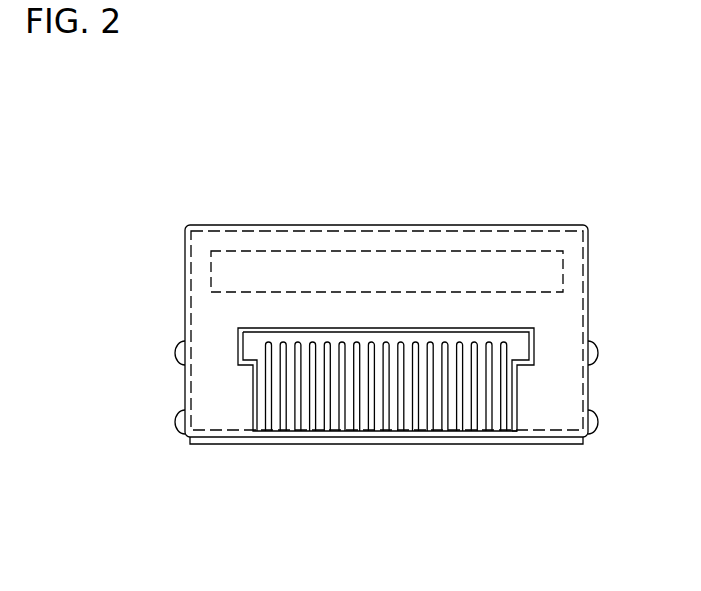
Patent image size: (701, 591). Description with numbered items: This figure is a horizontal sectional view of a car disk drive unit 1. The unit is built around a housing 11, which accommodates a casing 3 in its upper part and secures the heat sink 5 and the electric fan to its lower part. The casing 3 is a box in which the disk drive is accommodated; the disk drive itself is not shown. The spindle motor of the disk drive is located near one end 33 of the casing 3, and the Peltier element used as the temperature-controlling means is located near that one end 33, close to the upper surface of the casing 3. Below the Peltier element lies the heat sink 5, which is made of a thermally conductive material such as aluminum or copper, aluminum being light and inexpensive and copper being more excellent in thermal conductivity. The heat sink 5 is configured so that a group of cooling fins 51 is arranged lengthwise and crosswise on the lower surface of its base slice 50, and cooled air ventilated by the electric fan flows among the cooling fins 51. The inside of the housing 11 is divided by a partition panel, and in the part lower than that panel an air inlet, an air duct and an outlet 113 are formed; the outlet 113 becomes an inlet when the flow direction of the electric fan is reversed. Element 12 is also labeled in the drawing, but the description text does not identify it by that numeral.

The car disk drive unit 1 is at (247, 209).
The casing 3 is at (385, 251).
The one end of the casing 33 is at (552, 275).
The housing 11 is at (588, 313).
The base plate 12 is at (550, 415).
The heat sink 5 is at (483, 452).
The base slice 50 is at (240, 333).
The cooling fins 51 is at (283, 425).
The outlet 113 is at (518, 422).